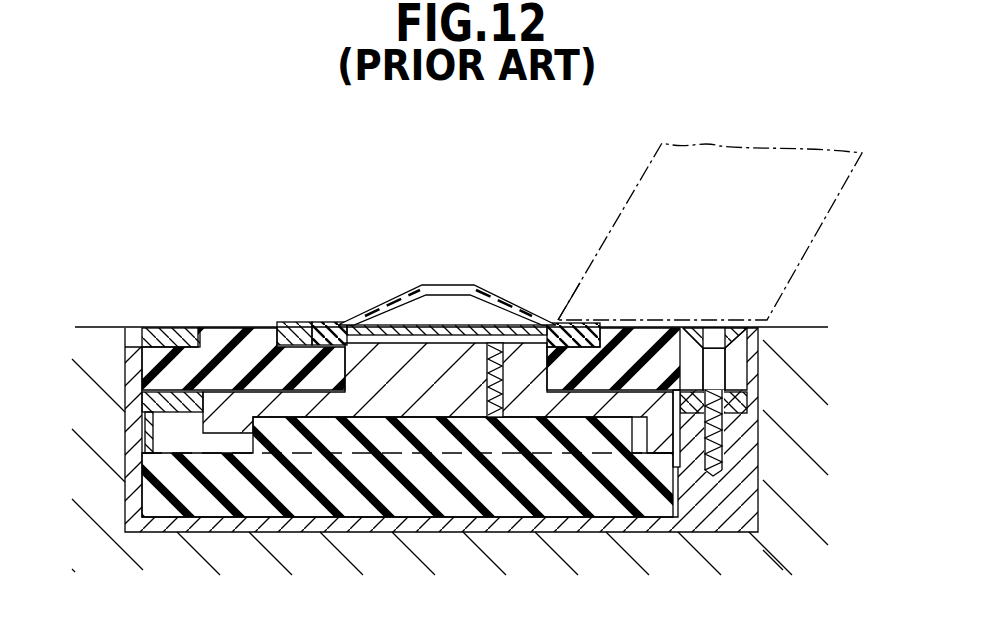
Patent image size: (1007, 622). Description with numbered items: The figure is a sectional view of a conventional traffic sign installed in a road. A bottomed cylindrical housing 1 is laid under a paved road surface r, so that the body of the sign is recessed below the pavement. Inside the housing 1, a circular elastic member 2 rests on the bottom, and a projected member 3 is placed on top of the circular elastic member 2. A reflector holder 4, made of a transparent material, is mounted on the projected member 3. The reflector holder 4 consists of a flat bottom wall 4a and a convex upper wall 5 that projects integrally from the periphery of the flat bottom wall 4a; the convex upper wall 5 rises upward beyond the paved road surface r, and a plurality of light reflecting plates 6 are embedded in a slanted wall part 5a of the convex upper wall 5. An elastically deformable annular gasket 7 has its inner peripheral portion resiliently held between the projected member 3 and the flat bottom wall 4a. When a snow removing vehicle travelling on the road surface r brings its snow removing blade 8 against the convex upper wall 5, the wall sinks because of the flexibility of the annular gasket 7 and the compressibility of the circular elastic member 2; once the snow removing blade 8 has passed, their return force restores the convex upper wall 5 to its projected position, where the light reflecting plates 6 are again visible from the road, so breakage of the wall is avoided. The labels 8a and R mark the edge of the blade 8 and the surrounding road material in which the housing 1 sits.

The bottomed cylindrical housing 1 is at (763, 470).
The circular elastic member 2 is at (555, 500).
The projected member 3 is at (420, 405).
The reflector holder 4 is at (442, 273).
The flat bottom wall 4a is at (300, 324).
The convex upper wall 5 is at (445, 286).
The slanted wall part 5a is at (363, 310).
The light reflecting plates 6 is at (400, 300).
The annular gasket 7 is at (215, 327).
The snow removing blade 8 is at (688, 176).
The cover edge 8a is at (562, 316).
The paved road surface r is at (805, 327).
The support surface R is at (803, 390).